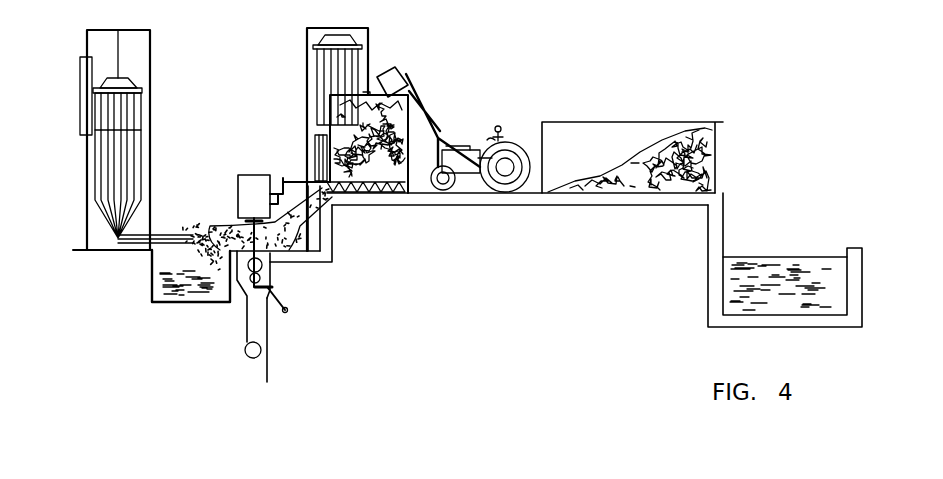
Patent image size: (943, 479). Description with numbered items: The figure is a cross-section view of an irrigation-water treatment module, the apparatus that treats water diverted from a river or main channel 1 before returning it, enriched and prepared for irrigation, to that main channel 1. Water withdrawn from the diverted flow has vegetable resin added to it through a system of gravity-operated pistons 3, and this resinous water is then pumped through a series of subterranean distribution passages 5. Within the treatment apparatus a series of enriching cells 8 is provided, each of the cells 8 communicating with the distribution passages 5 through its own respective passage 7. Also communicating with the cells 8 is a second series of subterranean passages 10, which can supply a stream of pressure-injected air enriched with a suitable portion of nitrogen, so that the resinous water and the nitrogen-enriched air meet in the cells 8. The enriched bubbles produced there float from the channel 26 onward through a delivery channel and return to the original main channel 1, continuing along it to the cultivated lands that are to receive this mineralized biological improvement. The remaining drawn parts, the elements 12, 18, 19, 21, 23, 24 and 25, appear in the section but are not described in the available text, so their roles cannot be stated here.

The main channel 1 is at (775, 285).
The gravity-operated pistons 3 is at (118, 110).
The subterranean distribution passages 5 is at (250, 350).
The passages 7 is at (260, 320).
The enriching cells 8 is at (269, 354).
The second series of subterranean passages 10 is at (285, 313).
The drive unit 12 is at (252, 185).
The platform with bin 18 is at (365, 195).
The conduit 19 is at (300, 182).
The grate outlet 21 is at (302, 200).
The discharge chute 23 is at (290, 200).
The loader tractor 24 is at (462, 168).
The refuse pile 25 is at (583, 158).
The channel 26 is at (181, 270).